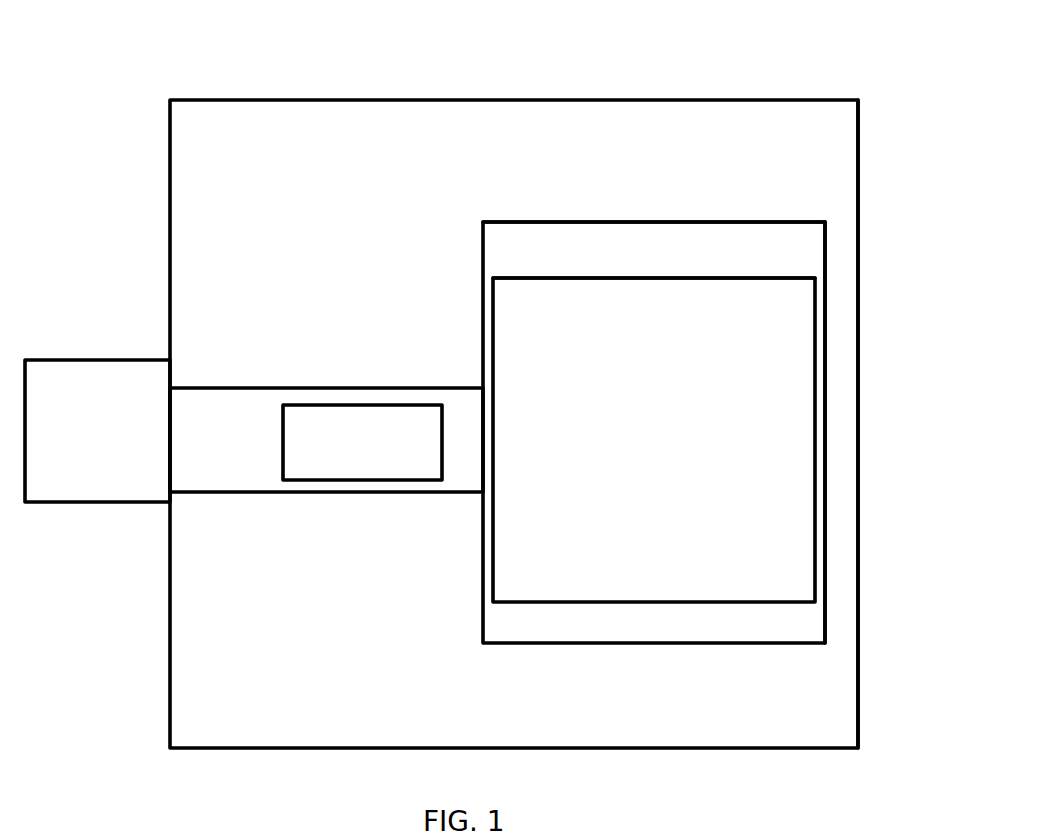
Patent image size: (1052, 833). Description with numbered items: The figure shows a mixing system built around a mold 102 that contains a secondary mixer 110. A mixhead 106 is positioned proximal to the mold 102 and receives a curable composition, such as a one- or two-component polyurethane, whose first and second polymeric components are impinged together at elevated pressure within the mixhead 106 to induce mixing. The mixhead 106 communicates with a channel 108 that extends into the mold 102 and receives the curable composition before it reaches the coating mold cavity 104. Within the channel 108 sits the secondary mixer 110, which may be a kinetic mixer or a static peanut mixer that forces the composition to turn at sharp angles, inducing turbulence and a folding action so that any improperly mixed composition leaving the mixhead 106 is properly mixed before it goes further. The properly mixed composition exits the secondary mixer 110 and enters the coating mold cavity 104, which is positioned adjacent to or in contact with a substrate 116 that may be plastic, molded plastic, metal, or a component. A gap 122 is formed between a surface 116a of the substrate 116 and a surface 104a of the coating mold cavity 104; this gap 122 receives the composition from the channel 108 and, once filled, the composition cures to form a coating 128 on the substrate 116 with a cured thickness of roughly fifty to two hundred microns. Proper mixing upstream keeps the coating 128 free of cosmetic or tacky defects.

The mold 102 is at (514, 384).
The coating mold cavity 104 is at (704, 440).
The surface of the coating mold cavity 104a is at (710, 250).
The mixhead 106 is at (97, 392).
The channel 108 is at (326, 262).
The secondary mixer 110 is at (362, 254).
The substrate 116 is at (654, 323).
The surface of the substrate 116a is at (654, 126).
The gap 122 is at (808, 350).
The coating 128 is at (874, 424).